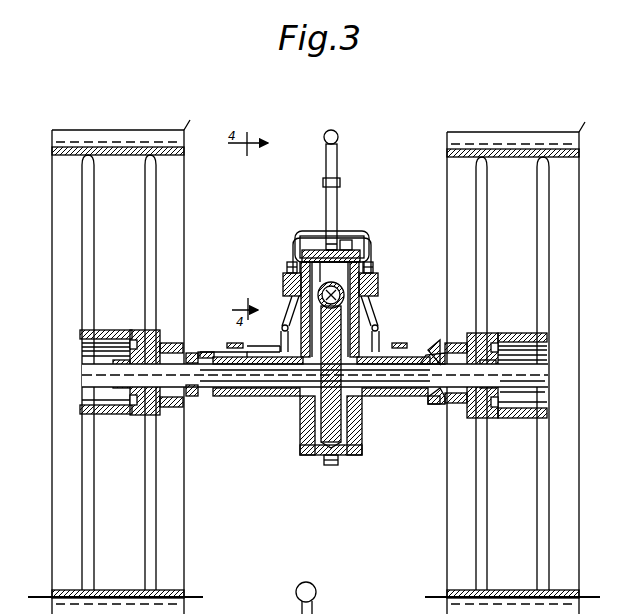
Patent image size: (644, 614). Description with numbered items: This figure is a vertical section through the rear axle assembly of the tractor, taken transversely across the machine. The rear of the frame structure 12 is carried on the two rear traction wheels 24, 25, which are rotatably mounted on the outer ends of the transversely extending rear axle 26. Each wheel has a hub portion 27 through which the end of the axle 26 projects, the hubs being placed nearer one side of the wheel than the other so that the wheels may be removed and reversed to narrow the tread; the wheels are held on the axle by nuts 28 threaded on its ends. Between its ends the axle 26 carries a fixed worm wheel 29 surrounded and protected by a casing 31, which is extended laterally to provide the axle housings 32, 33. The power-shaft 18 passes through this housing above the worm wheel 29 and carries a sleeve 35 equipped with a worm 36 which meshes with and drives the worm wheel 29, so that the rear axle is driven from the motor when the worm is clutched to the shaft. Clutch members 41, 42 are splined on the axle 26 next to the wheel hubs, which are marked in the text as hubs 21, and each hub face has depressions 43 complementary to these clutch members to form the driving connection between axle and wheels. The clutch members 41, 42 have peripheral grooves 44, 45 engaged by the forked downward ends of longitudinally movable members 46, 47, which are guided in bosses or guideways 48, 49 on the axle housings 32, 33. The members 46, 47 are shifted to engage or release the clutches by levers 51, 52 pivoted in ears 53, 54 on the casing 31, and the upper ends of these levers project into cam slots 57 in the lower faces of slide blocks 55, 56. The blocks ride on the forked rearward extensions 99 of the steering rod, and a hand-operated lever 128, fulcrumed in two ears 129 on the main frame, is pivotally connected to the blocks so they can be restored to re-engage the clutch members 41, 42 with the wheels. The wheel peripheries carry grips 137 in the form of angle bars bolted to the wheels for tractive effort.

The frame structure 12 is at (345, 245).
The power-shaft 18 is at (345, 286).
The belt pulley 21 is at (547, 352).
The rear traction wheel 24 is at (100, 138).
The rear traction wheel 25 is at (511, 138).
The rear axle 26 is at (392, 396).
The hub portion 27 is at (130, 420).
The nut 28 is at (585, 392).
The worm wheel 29 is at (320, 437).
The casing 31 is at (350, 448).
The axle housing 32 is at (362, 420).
The axle housing 33 is at (255, 396).
The sleeve 35 is at (358, 270).
The worm 36 is at (318, 240).
The clutch member 41 is at (186, 400).
The clutch member 42 is at (440, 404).
The depression 43 is at (488, 342).
The peripheral groove 44 is at (205, 400).
The peripheral groove 45 is at (418, 405).
The longitudinally movable member 46 is at (266, 346).
The longitudinally movable member 47 is at (428, 344).
The boss or guideway 48 is at (228, 336).
The boss or guideway 49 is at (397, 343).
The lever 51 is at (283, 322).
The lever 52 is at (378, 335).
The ear 53 is at (289, 300).
The ear 54 is at (380, 310).
The slide block 55 is at (285, 275).
The slide block 56 is at (378, 280).
The cam slot 57 is at (375, 292).
The forked rearward extension 99 is at (383, 270).
The hand-operated lever 128 is at (337, 150).
The ear 129 is at (370, 243).
The grip 137 is at (389, 117).